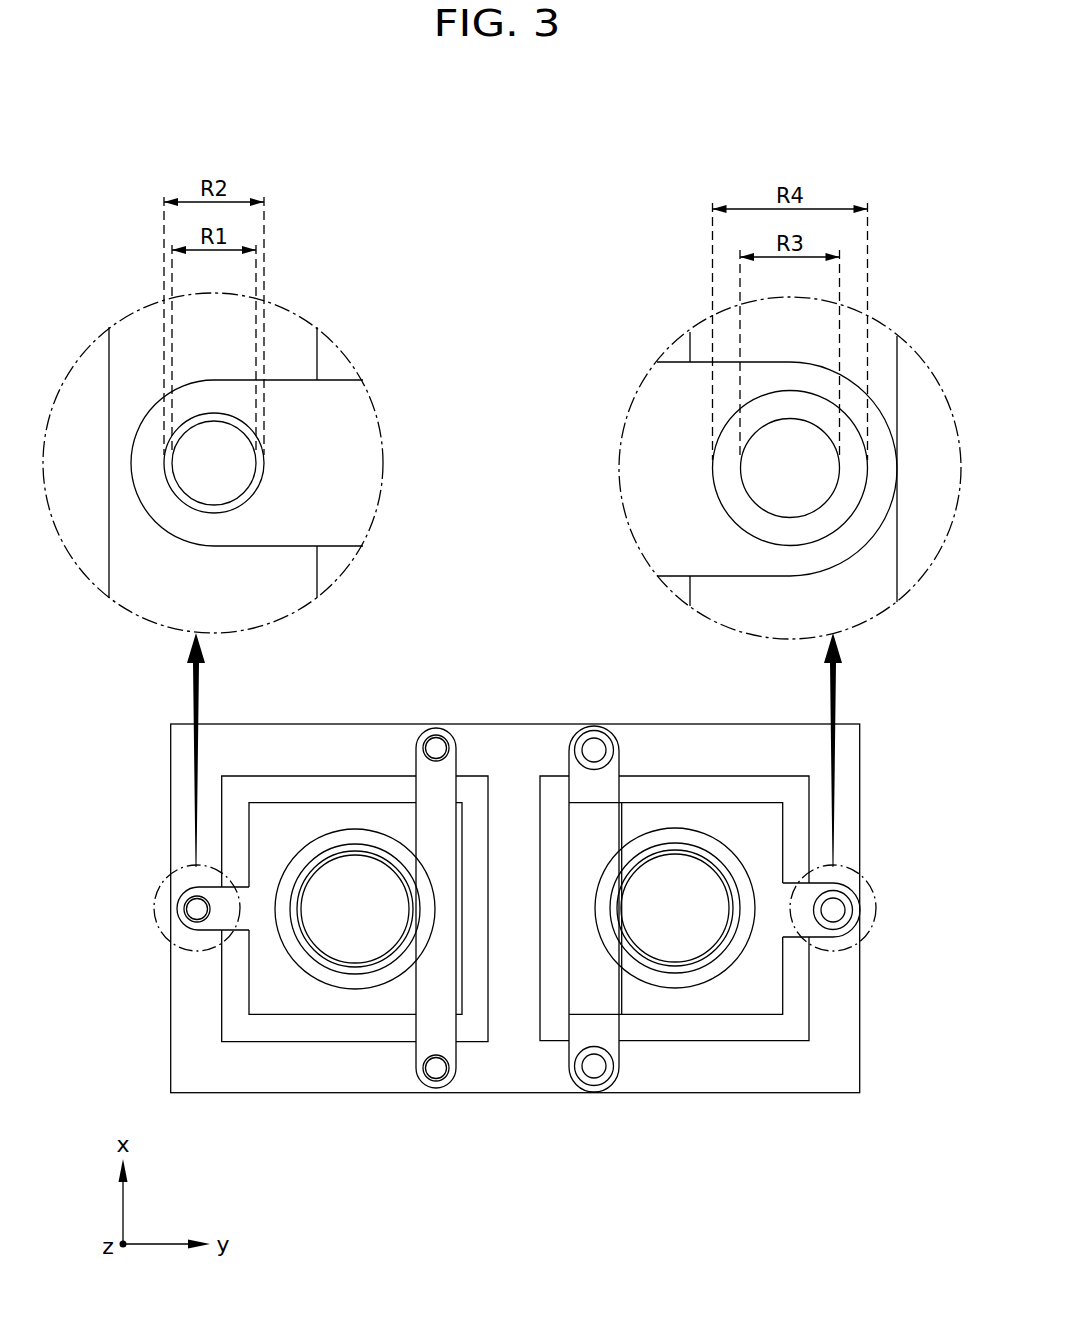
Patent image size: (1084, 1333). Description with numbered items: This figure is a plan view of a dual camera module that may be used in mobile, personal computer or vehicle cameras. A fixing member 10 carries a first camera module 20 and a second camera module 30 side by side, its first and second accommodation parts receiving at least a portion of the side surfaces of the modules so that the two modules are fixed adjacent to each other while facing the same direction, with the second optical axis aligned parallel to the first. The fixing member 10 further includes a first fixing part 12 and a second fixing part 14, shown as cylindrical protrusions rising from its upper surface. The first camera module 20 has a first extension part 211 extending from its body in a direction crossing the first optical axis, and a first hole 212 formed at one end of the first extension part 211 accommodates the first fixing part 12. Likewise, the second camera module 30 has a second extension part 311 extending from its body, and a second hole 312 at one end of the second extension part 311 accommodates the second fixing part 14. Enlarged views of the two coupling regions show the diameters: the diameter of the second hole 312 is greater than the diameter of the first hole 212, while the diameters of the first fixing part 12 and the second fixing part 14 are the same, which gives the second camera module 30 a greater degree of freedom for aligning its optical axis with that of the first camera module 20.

The fixing member 10 is at (514, 724).
The first fixing part 12 is at (213, 475).
The second fixing part 14 is at (792, 480).
The first camera module 20 is at (335, 802).
The second camera module 30 is at (696, 802).
The first extension part 211 is at (370, 458).
The first hole 212 is at (258, 488).
The second extension part 311 is at (637, 462).
The second hole 312 is at (727, 512).